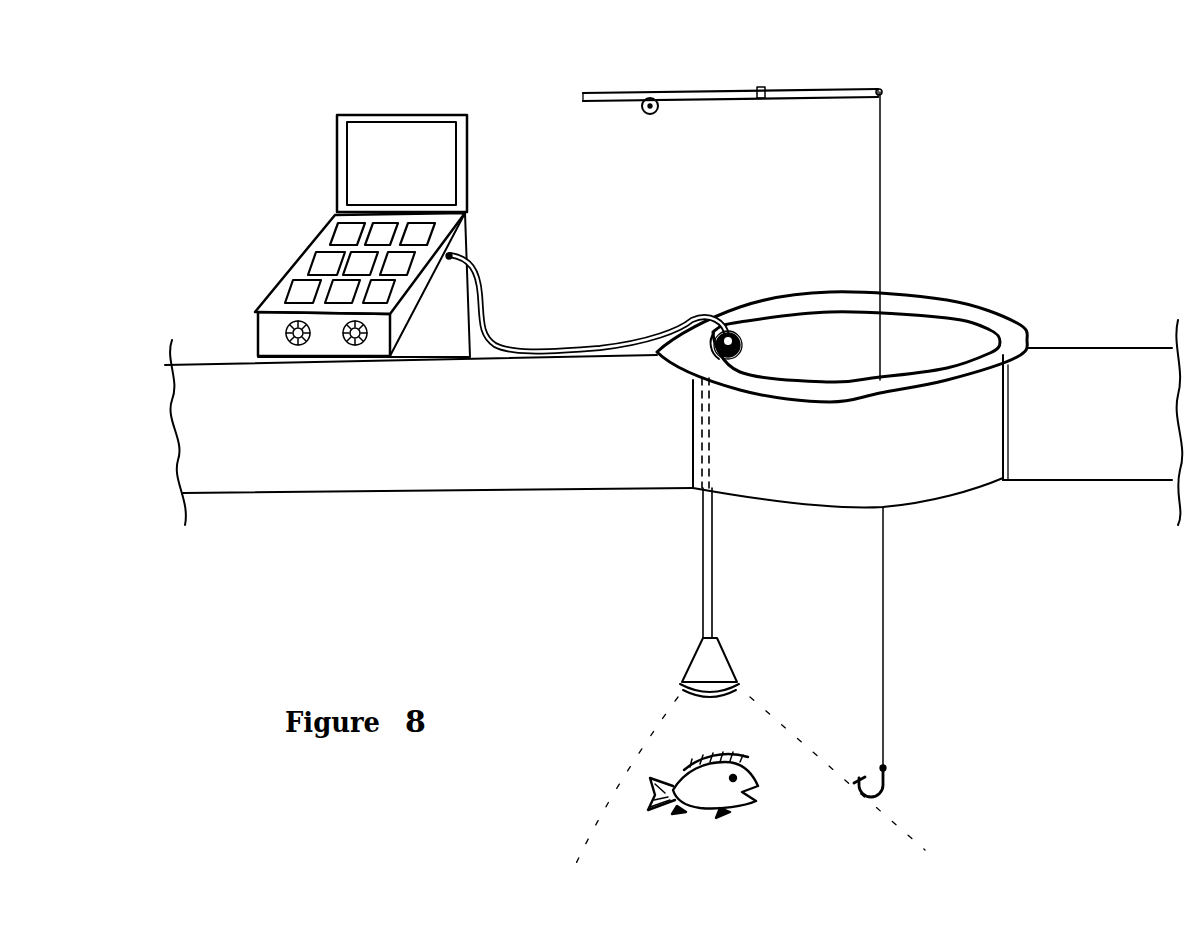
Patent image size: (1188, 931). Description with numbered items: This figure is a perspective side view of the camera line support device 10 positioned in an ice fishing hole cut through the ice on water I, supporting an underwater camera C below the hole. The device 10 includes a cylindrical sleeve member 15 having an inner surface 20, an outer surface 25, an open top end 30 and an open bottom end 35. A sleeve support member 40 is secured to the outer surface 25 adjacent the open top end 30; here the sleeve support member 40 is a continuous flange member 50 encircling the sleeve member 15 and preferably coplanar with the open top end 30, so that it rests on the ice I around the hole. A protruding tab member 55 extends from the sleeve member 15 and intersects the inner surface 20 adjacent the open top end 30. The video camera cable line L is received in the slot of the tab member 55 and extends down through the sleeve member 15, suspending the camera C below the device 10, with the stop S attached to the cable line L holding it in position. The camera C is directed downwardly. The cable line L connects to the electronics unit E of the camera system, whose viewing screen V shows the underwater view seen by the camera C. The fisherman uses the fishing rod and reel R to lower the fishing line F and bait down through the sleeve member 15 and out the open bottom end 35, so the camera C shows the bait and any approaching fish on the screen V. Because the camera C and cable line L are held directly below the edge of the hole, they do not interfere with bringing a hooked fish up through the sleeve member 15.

The camera line support device 10 is at (1058, 198).
The cylindrical sleeve member 15 is at (978, 492).
The inner surface 20 is at (846, 350).
The outer surface 25 is at (783, 468).
The open top end 30 is at (840, 258).
The open bottom end 35 is at (823, 560).
The sleeve support member 40 is at (1040, 309).
The continuous flange member 50 is at (948, 306).
The protruding tab member 55 is at (753, 308).
The fishing rod and reel R is at (700, 90).
The viewing screen of camera system V is at (420, 158).
The electronics unit of camera system E is at (354, 236).
The cable line to camera L is at (568, 345).
The stop attached to cable line S is at (727, 312).
The underwater camera C is at (672, 668).
The fishing line F is at (882, 255).
The ice on water I is at (1110, 427).